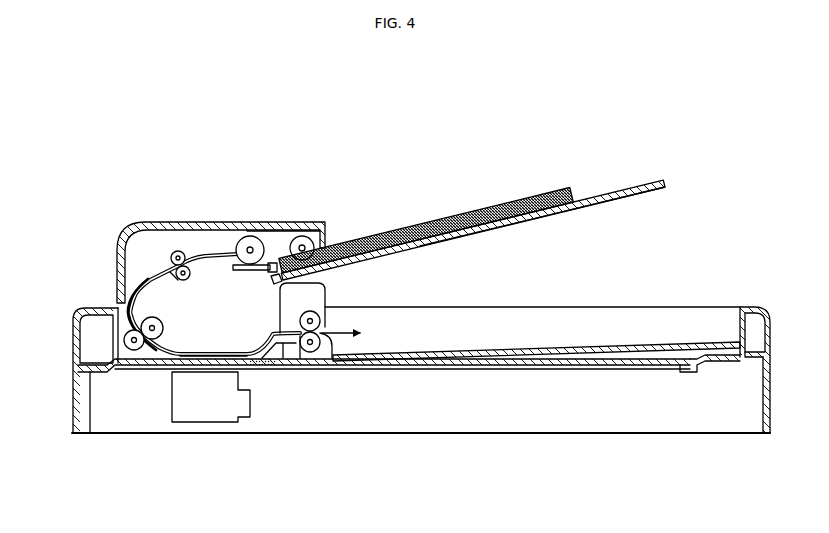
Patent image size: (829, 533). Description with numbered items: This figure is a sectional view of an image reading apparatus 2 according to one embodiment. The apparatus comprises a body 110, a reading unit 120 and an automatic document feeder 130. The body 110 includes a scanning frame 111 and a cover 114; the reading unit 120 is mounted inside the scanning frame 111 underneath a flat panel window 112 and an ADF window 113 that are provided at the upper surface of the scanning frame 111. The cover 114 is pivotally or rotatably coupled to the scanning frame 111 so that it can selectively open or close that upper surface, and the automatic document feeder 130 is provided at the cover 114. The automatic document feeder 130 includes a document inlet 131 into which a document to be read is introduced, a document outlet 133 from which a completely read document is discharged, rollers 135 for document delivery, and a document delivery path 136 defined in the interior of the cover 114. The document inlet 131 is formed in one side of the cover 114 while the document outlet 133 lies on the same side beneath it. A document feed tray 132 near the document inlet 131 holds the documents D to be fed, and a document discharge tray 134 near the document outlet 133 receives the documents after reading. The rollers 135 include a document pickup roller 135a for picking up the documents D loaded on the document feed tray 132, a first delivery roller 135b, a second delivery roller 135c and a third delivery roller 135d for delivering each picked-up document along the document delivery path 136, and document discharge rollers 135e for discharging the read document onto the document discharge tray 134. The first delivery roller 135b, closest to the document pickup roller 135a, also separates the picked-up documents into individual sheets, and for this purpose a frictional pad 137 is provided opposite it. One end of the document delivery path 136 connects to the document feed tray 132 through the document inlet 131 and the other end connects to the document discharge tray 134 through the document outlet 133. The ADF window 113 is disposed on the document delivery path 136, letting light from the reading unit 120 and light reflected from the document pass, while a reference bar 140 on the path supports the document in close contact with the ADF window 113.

The image reading apparatus 2 is at (698, 134).
The body 110 is at (70, 301).
The scanning frame 111 is at (72, 412).
The flat panel window 112 is at (656, 361).
The ADF window 113 is at (193, 364).
The cover 114 is at (116, 250).
The reading unit 120 is at (162, 417).
The automatic document feeder 130 is at (343, 209).
The document inlet 131 is at (322, 250).
The document feed tray 132 is at (525, 226).
The document outlet 133 is at (403, 342).
The document discharge tray 134 is at (503, 346).
The rollers 135 is at (229, 313).
The document pickup roller 135a is at (301, 235).
The first delivery roller 135b is at (248, 236).
The second delivery roller 135c is at (180, 251).
The third delivery roller 135d is at (149, 318).
The document discharge rollers 135e is at (308, 346).
The document delivery path 136 is at (165, 275).
The frictional pad 137 is at (273, 284).
The reference bar 140 is at (207, 353).
The documents D is at (473, 215).